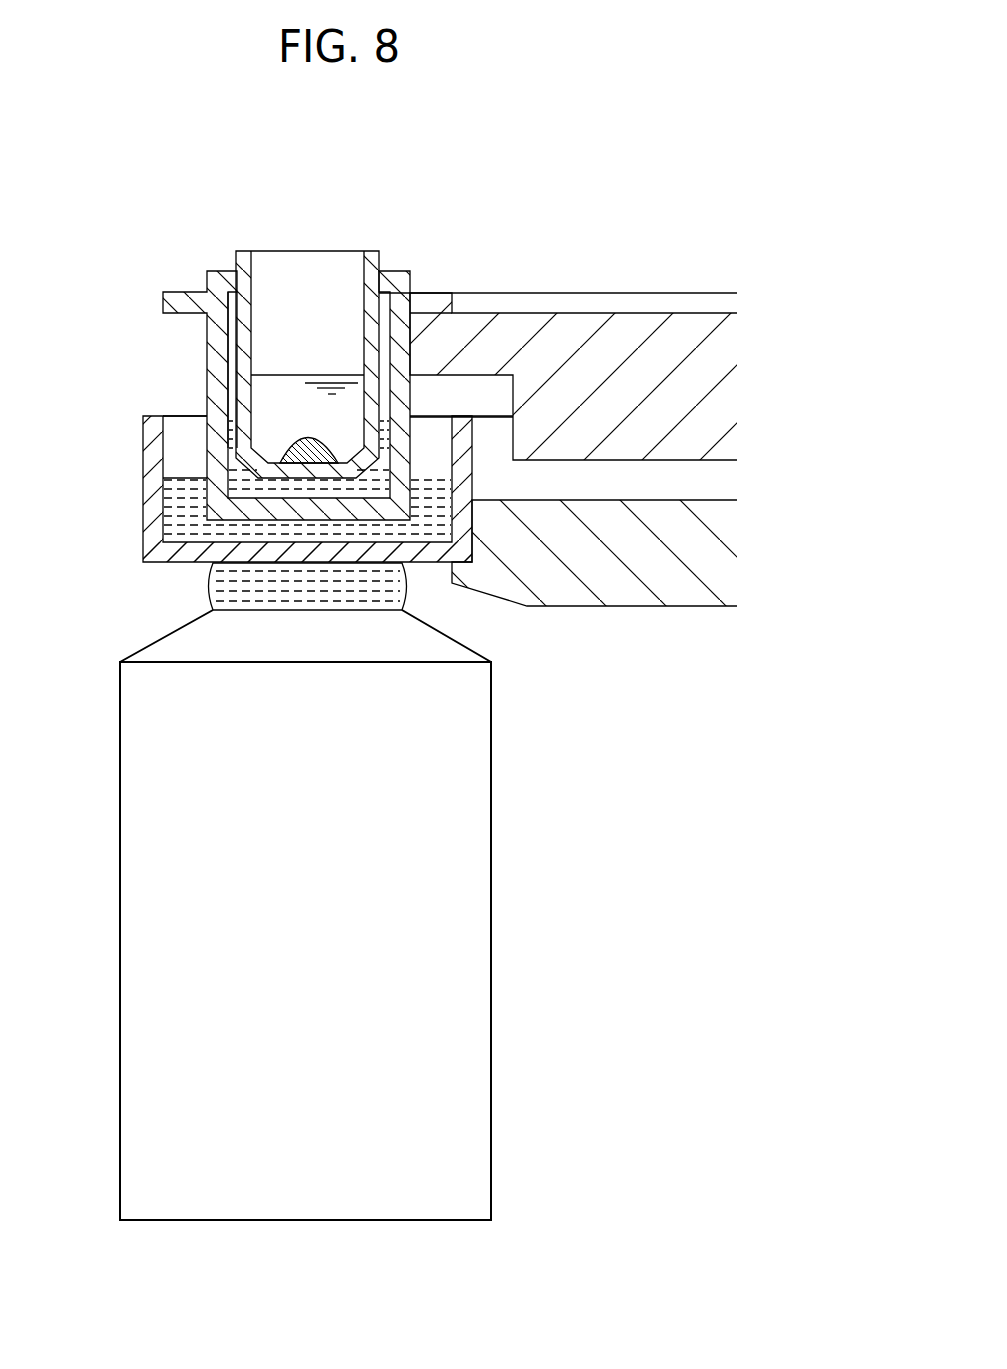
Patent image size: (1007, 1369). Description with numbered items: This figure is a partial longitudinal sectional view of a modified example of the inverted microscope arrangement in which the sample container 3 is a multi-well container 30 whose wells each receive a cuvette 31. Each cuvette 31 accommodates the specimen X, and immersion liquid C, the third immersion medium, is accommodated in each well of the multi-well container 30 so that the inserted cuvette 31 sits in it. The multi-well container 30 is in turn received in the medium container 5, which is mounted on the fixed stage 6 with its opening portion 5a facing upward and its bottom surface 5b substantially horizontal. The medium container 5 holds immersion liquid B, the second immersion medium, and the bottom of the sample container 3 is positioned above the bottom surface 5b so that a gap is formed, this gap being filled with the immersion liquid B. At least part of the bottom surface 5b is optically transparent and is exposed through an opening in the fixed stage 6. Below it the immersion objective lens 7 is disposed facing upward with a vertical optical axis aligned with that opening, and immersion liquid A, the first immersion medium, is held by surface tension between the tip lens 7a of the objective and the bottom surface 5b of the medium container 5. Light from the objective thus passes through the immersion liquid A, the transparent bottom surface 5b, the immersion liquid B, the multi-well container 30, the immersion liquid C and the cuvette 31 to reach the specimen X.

The sample container 3 is at (246, 243).
The cuvette 31 is at (322, 250).
The multi-well container 30 is at (172, 292).
The specimen X is at (290, 438).
The immersion liquid (third immersion medium) C is at (232, 392).
The medium container 5 is at (120, 490).
The opening portion 5a is at (180, 425).
The bottom surface 5b is at (200, 522).
The immersion liquid (second immersion medium) B is at (430, 478).
The fixed stage 6 is at (655, 606).
The immersion liquid (first immersion medium) A is at (404, 585).
The immersion objective lens 7 is at (513, 942).
The tip lens 7a is at (213, 607).